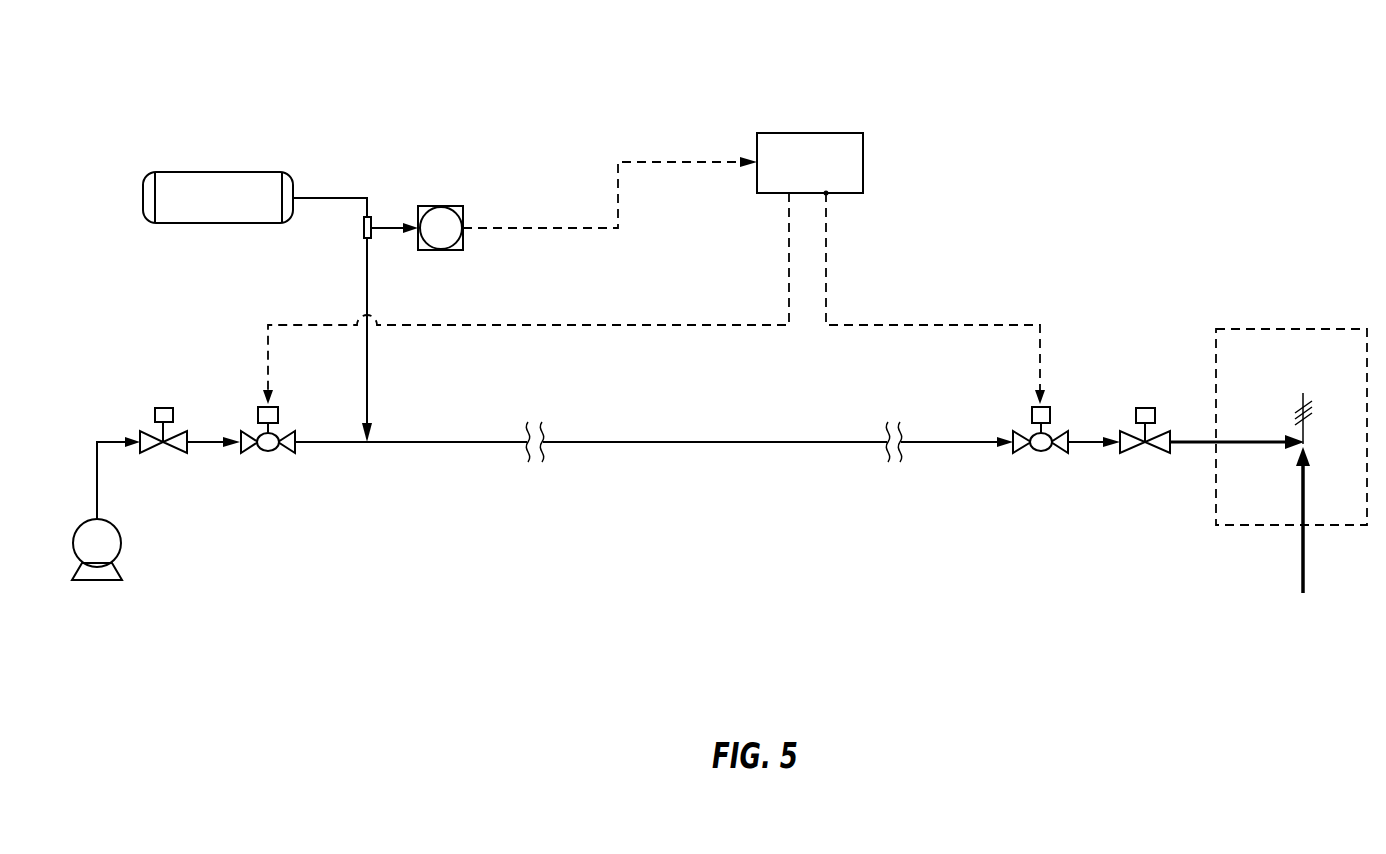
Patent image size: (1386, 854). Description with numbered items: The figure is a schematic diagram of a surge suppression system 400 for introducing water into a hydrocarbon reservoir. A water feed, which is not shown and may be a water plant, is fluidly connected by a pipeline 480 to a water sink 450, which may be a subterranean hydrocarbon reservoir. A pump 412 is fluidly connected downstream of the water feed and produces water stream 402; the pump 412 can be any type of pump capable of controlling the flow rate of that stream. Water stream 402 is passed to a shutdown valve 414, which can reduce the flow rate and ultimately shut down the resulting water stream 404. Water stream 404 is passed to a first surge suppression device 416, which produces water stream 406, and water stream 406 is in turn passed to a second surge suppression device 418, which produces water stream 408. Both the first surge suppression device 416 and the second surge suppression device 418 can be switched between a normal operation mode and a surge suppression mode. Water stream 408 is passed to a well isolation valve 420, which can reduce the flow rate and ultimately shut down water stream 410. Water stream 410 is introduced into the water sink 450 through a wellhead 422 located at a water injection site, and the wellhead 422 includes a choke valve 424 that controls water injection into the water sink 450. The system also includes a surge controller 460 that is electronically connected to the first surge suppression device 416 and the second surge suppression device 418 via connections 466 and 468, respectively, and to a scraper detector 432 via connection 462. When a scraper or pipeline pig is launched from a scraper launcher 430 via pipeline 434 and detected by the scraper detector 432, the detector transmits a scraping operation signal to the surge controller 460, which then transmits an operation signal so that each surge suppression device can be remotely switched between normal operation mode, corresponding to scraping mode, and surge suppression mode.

The surge suppression system 400 is at (146, 60).
The water stream 402 is at (95, 467).
The water stream 404 is at (213, 435).
The water stream 406 is at (683, 440).
The water stream 408 is at (1093, 437).
The water stream 410 is at (1270, 448).
The pump 412 is at (115, 545).
The shutdown valve 414 is at (170, 454).
The first surge suppression device 416 is at (270, 452).
The second surge suppression device 418 is at (1036, 452).
The well isolation valve 420 is at (1157, 452).
The wellhead 422 is at (1317, 326).
The choke valve 424 is at (1276, 417).
The scraper launcher 430 is at (238, 210).
The scraper detector 432 is at (455, 204).
The pipeline 434 is at (368, 355).
The water sink 450 is at (1301, 552).
The surge controller 460 is at (830, 175).
The connection 462 is at (652, 160).
The connection 466 is at (713, 323).
The connection 468 is at (969, 323).
The pipeline 480 is at (739, 442).